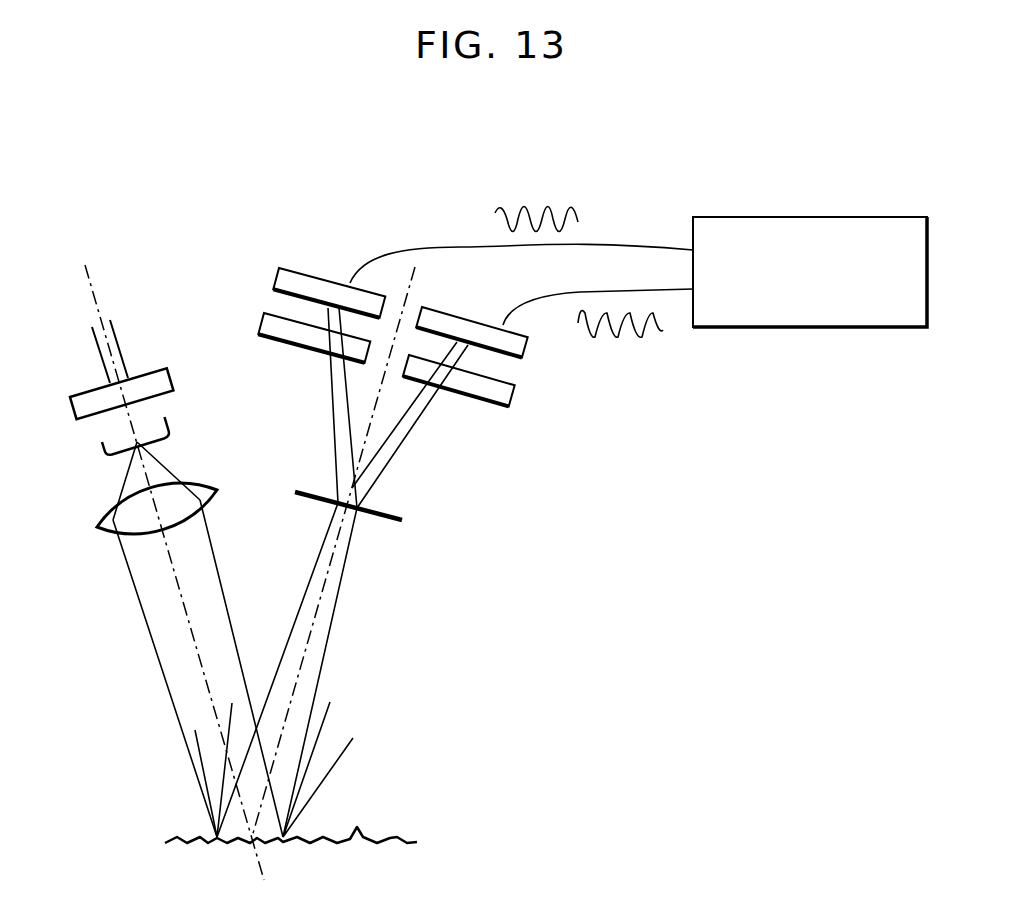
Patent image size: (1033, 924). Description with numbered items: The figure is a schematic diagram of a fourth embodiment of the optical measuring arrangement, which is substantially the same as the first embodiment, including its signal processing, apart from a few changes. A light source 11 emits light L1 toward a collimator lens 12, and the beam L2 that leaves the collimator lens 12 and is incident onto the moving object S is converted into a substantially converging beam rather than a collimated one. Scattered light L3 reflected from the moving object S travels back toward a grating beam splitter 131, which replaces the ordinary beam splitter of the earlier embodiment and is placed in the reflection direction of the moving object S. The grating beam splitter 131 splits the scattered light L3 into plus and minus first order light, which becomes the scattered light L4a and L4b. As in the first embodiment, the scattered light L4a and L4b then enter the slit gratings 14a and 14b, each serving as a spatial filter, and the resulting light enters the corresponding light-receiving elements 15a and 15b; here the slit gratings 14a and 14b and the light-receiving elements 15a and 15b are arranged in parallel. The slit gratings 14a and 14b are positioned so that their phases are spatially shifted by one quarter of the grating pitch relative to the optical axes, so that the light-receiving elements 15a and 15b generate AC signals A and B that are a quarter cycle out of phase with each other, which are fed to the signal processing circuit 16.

The laser light source 11 is at (92, 396).
The collimator lens 12 is at (100, 527).
The grating beam splitter 131 is at (402, 518).
The slit grating 14a is at (263, 327).
The slit grating 14b is at (516, 394).
The light-receiving element 15a is at (276, 283).
The light-receiving element 15b is at (528, 344).
The signal processing circuit 16 is at (827, 215).
The laser light from source L1 is at (126, 479).
The beam L2 is at (160, 662).
The scattered light L3 is at (330, 702).
The scattered light L4a is at (333, 428).
The scattered light L4b is at (405, 440).
The moving object S is at (397, 836).